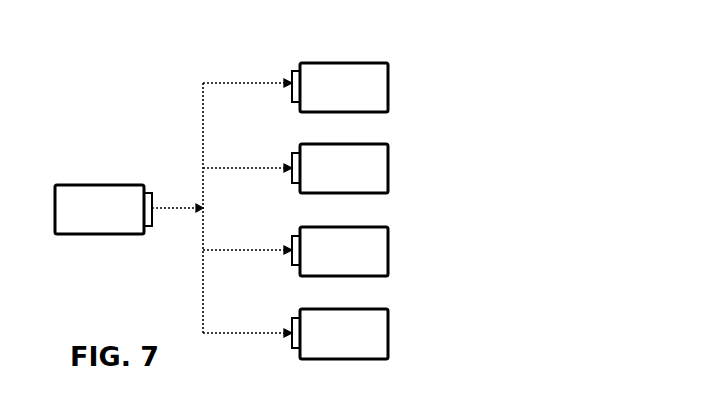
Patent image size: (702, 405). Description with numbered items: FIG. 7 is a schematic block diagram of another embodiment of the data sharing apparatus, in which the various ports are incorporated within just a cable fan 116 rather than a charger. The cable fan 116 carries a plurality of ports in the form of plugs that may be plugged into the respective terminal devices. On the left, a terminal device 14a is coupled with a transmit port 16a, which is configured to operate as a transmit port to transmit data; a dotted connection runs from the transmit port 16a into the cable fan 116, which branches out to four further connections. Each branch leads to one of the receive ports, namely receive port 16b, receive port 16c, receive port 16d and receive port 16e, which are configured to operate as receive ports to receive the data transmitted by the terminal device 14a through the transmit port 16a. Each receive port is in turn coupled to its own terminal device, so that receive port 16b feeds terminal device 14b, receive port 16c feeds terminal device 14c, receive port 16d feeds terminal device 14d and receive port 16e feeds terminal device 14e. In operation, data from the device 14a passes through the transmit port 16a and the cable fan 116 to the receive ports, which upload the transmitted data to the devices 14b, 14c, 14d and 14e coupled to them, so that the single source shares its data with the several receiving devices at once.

The terminal device 14a is at (101, 185).
The transmit port 16a is at (150, 193).
The cable fan 116 is at (225, 82).
The terminal device 14b is at (362, 63).
The receive port 16b is at (296, 70).
The terminal device 14c is at (362, 144).
The receive port 16c is at (296, 152).
The terminal device 14d is at (362, 227).
The receive port 16d is at (296, 235).
The terminal device 14e is at (362, 309).
The receive port 16e is at (296, 317).